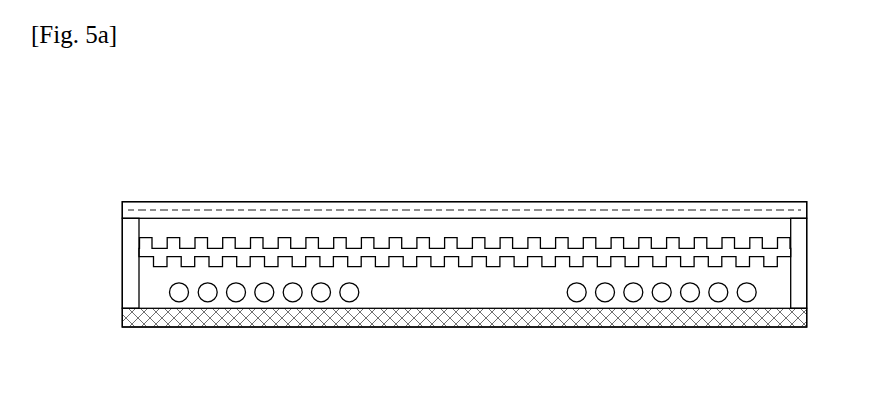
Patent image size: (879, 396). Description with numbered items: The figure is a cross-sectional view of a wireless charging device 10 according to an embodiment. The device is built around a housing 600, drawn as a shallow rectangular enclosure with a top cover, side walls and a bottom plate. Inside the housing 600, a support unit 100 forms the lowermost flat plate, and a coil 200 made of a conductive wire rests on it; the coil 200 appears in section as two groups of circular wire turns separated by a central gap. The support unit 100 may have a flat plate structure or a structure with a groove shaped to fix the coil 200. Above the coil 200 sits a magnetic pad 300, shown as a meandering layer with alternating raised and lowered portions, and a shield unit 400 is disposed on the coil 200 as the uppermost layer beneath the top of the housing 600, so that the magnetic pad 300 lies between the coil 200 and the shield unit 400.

The wireless charging device 10 is at (487, 120).
The support unit 100 is at (422, 317).
The coil 200 is at (264, 296).
The magnetic pad 300 is at (393, 243).
The shield unit 400 is at (477, 212).
The housing 600 is at (133, 220).